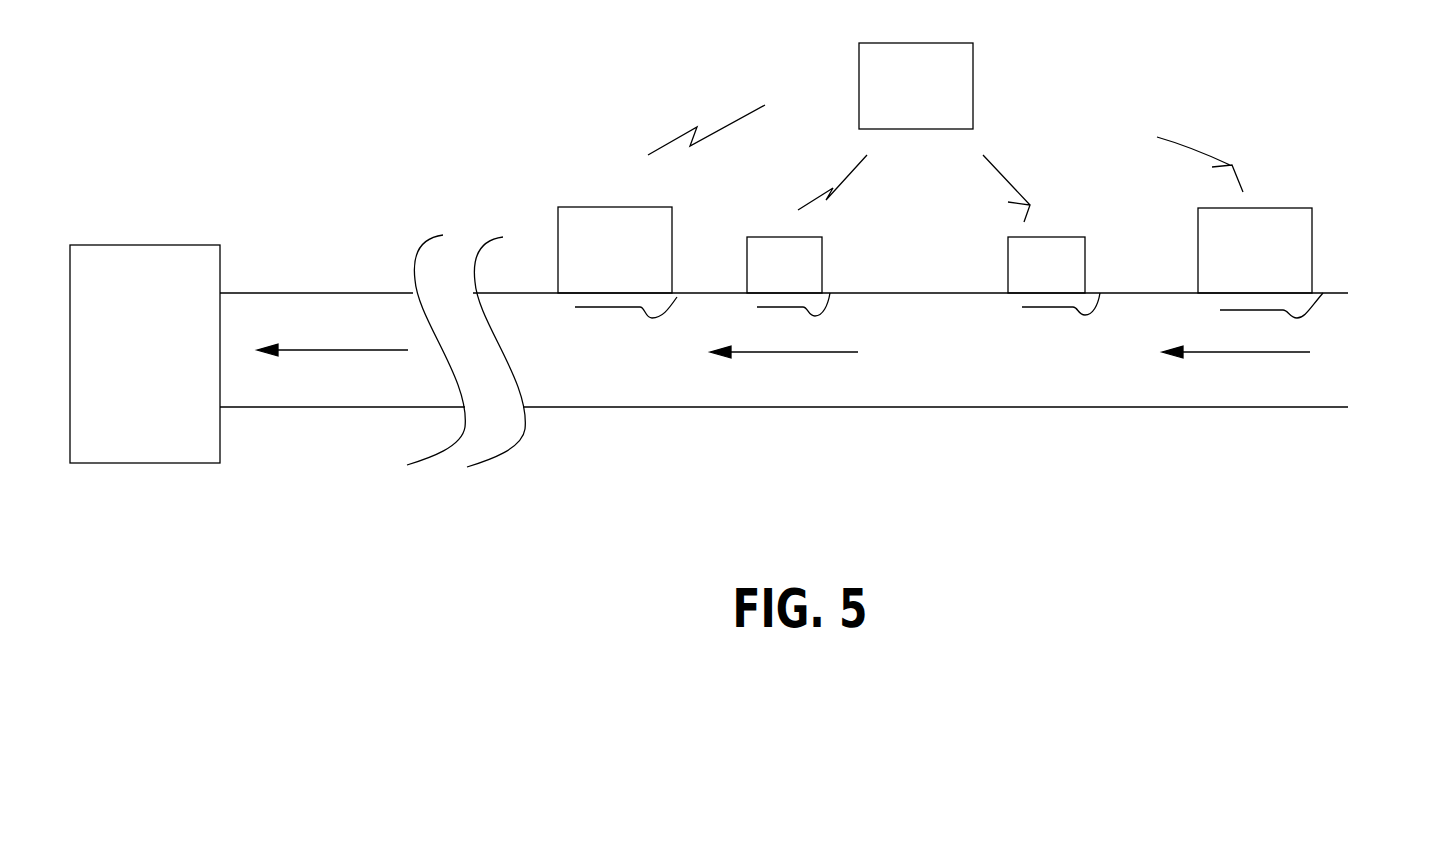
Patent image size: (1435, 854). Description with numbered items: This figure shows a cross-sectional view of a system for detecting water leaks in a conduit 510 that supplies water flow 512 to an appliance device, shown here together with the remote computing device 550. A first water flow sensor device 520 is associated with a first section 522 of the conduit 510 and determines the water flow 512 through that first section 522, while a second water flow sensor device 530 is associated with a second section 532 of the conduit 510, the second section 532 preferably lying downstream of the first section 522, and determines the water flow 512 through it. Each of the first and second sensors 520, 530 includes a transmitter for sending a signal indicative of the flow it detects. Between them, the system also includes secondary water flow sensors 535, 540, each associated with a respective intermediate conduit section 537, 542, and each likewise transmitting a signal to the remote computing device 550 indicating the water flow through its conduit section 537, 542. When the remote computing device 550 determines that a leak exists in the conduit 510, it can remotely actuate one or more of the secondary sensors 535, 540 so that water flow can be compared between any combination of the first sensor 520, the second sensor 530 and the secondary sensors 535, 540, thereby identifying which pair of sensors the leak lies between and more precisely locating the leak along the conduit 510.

The conduit 510 is at (307, 407).
The water flow 512 is at (313, 349).
The first water flow sensor device 520 is at (1255, 250).
The first section 522 is at (1323, 293).
The second water flow sensor device 530 is at (615, 250).
The second section 532 is at (677, 297).
The secondary water flow sensor 535 is at (1046, 265).
The conduit section 537 is at (1100, 293).
The secondary water flow sensor 540 is at (784, 265).
The conduit section 542 is at (830, 293).
The remote computing device 550 is at (656, 253).